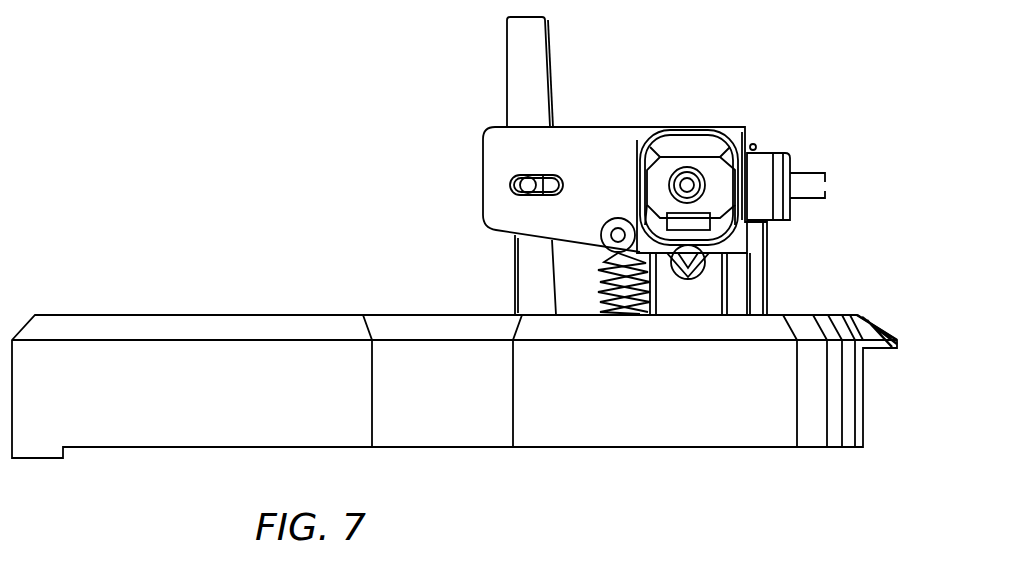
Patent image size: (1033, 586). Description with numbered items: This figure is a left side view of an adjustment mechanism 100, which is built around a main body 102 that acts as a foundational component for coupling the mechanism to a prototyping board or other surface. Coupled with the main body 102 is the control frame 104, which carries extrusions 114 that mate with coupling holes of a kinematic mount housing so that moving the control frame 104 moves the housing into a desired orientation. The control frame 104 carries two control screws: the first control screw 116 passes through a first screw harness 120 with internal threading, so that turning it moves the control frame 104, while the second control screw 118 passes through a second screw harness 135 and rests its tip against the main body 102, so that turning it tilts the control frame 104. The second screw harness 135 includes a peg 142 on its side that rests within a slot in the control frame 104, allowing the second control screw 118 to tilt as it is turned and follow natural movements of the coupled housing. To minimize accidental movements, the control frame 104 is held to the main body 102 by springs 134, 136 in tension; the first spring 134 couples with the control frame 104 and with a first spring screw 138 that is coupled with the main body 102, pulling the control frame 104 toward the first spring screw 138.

The adjustment mechanism 100 is at (190, 130).
The main body 102 is at (212, 330).
The control frame 104 is at (627, 132).
The extrusions 114 is at (815, 187).
The first control screw 116 is at (688, 185).
The second control screw 118 is at (508, 37).
The first screw harness 120 is at (689, 157).
The first spring 134 is at (710, 264).
The second screw harness 135 is at (548, 182).
The spring 136 is at (622, 303).
The first spring screw 138 is at (690, 297).
The peg 142 is at (528, 180).